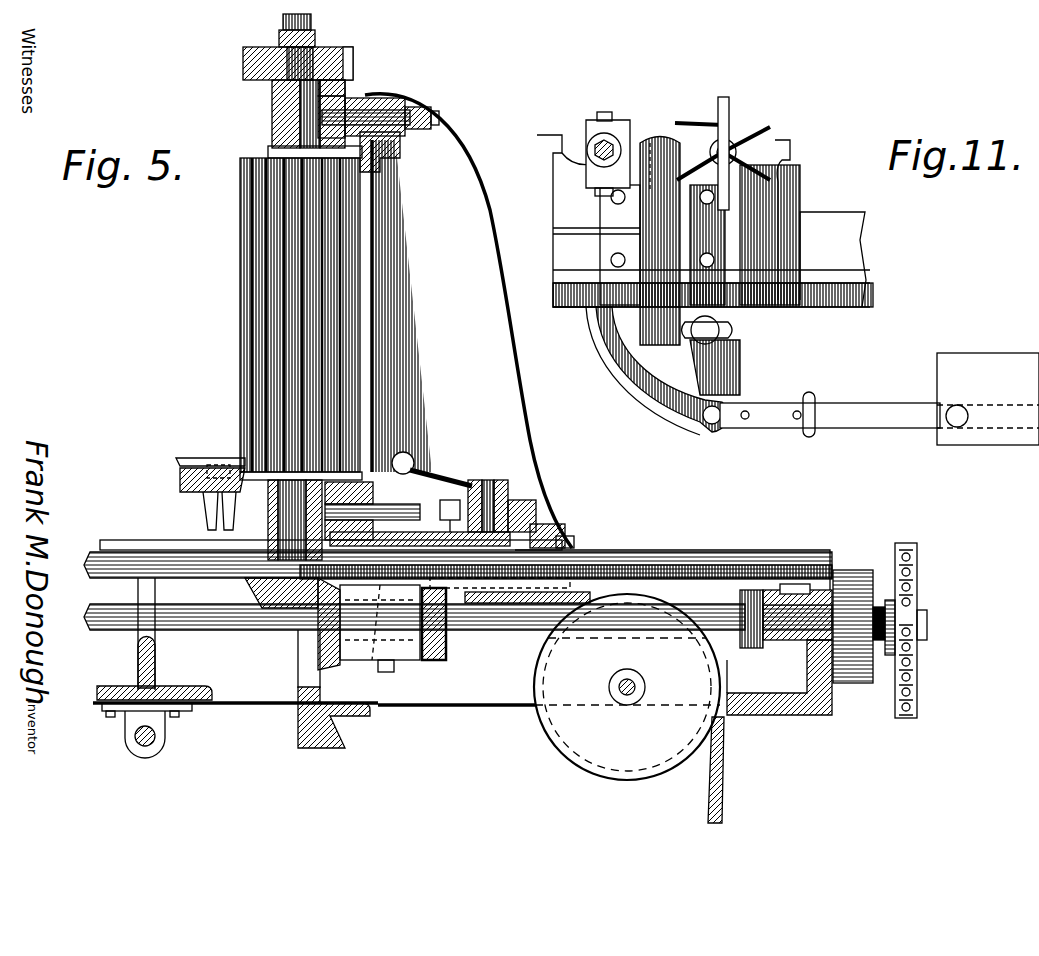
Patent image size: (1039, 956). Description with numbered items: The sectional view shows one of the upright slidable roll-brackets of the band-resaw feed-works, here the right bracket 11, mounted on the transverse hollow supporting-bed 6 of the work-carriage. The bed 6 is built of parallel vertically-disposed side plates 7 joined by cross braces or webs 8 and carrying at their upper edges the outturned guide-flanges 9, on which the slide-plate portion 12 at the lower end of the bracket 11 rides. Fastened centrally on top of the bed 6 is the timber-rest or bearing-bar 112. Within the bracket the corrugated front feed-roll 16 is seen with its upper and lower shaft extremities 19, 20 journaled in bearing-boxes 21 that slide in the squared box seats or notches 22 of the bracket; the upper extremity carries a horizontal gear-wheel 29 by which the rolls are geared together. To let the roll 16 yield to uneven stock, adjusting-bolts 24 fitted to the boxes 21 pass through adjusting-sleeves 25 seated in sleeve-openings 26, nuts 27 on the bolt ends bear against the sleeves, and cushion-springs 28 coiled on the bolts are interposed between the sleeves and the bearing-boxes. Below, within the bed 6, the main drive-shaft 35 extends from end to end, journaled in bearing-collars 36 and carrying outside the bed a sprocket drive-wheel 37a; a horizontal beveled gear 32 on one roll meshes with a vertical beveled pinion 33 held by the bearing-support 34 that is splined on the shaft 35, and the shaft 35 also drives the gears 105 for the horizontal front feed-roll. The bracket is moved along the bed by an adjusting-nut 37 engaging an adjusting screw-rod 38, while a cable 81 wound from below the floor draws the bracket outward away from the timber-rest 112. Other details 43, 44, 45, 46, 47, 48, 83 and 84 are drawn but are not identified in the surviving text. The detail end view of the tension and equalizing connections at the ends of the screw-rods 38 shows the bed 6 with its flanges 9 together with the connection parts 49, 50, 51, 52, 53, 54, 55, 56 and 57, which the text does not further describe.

In FIG. 5, the upright slidable roll-bracket 11 is at (475, 300).
In FIG. 5, the horizontal gear-wheel 29 is at (243, 60).
In FIG. 5, the box seat or notch 22 is at (328, 80).
In FIG. 5, the bearing-box 21 is at (273, 102).
In FIG. 5, the upper shaft extremity 19 is at (300, 112).
In FIG. 5, the cushion-spring 28 is at (352, 98).
In FIG. 5, the adjusting-bolt 24 is at (378, 110).
In FIG. 5, the adjusting-sleeve 25 is at (415, 115).
In FIG. 5, the nut 27 is at (415, 130).
In FIG. 5, the sleeve-opening 26 is at (385, 160).
In FIG. 5, the front upright feed-roll 16 is at (240, 307).
In FIG. 5, the timber-rest or bearing-bar 112 is at (205, 462).
In FIG. 5, the lower shaft extremity 20 is at (270, 516).
In FIG. 5, the slide-plate portion 12 is at (604, 510).
In FIG. 5, the nut 48 is at (417, 514).
In FIG. 5, the cross brace or web 8 is at (138, 663).
In FIG. 5, the handle 46 is at (425, 472).
In FIG. 5, the lever 44 is at (490, 480).
In FIG. 5, the pivot 47 is at (512, 520).
In FIG. 5, the block 45 is at (542, 526).
In FIG. 5, the bracket 43 is at (570, 548).
In FIG. 5, the adjusting screw-rod 38 is at (682, 565).
In FIG. 11, the adjusting screw-rod 38 is at (612, 146).
In FIG. 5, the main drive-shaft 35 is at (222, 630).
In FIG. 5, the side plate 7 is at (245, 692).
In FIG. 5, the horizontal beveled gear-wheel 32 is at (270, 584).
In FIG. 5, the vertical beveled gear wheel or pinion 33 is at (322, 640).
In FIG. 5, the bearing-support 34 is at (366, 630).
In FIG. 5, the adjusting-nut 37 is at (476, 608).
In FIG. 5, the disc 84 is at (618, 763).
In FIG. 5, the hub 83 is at (636, 682).
In FIG. 5, the bearing-collar 36 is at (780, 650).
In FIG. 5, the supporting-bed 6 is at (800, 714).
In FIG. 11, the supporting-bed 6 is at (780, 170).
In FIG. 5, the gears 105 is at (845, 572).
In FIG. 5, the sprocket drive-wheel 37a is at (918, 676).
In FIG. 5, the cable 81 is at (723, 792).
In FIG. 11, the outturned guide-flange 9 is at (547, 135).
In FIG. 11, the plate 53 is at (628, 207).
In FIG. 11, the post 52 is at (660, 240).
In FIG. 11, the hub 51 is at (680, 136).
In FIG. 11, the clamp 49 is at (597, 139).
In FIG. 11, the spindle 50 is at (722, 97).
In FIG. 11, the arm 57 is at (665, 368).
In FIG. 11, the pin 54 is at (735, 322).
In FIG. 11, the boss 55 is at (738, 345).
In FIG. 11, the link 56 is at (806, 402).